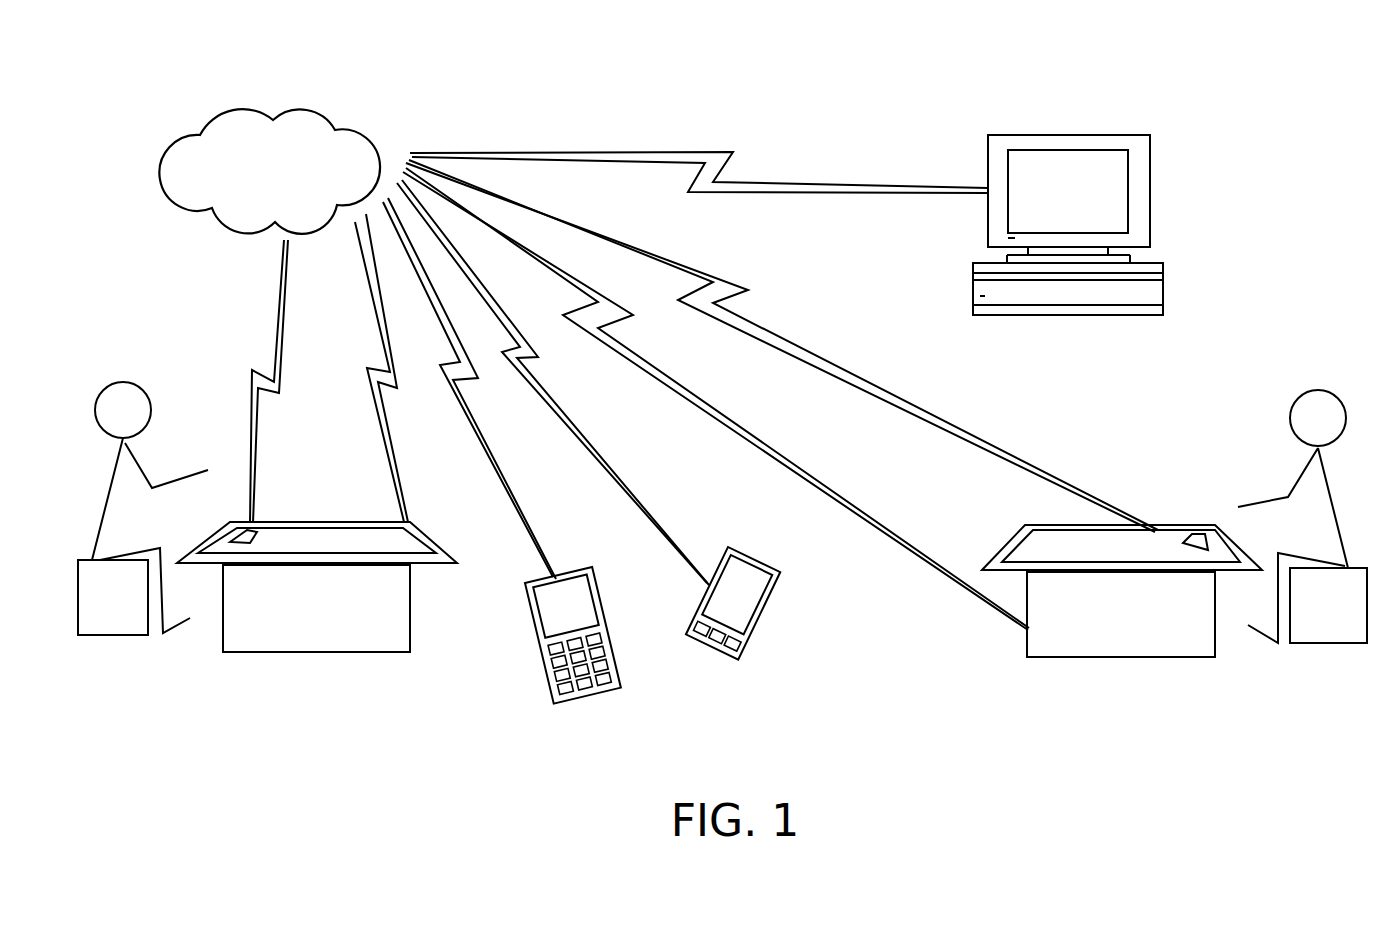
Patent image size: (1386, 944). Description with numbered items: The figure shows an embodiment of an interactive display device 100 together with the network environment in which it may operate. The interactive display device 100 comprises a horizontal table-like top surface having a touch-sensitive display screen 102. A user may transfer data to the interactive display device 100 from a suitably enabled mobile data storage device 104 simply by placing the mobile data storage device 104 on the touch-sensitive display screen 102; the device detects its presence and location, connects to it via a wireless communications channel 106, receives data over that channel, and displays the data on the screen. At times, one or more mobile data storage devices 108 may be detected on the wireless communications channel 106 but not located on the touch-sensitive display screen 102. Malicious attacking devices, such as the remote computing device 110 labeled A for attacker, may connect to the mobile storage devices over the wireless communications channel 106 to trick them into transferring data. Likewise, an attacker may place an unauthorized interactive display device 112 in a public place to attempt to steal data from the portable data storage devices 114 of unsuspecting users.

The interactive display device 100 is at (319, 626).
The touch-sensitive display screen 102 is at (320, 535).
The mobile data storage device 104 is at (237, 536).
The wireless communications channel 106 is at (302, 108).
The mobile data storage devices 108 is at (590, 698).
The remote computing device 110 is at (1150, 195).
The unauthorized interactive display device 112 is at (1122, 657).
The portable data storage devices 114 is at (1205, 540).